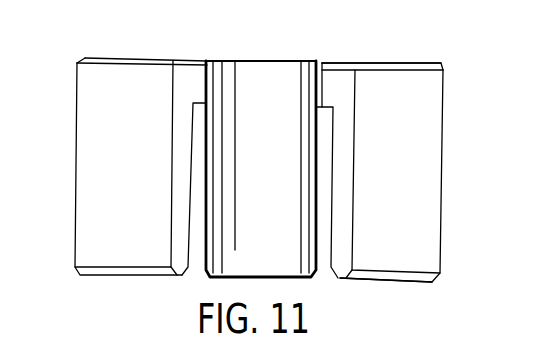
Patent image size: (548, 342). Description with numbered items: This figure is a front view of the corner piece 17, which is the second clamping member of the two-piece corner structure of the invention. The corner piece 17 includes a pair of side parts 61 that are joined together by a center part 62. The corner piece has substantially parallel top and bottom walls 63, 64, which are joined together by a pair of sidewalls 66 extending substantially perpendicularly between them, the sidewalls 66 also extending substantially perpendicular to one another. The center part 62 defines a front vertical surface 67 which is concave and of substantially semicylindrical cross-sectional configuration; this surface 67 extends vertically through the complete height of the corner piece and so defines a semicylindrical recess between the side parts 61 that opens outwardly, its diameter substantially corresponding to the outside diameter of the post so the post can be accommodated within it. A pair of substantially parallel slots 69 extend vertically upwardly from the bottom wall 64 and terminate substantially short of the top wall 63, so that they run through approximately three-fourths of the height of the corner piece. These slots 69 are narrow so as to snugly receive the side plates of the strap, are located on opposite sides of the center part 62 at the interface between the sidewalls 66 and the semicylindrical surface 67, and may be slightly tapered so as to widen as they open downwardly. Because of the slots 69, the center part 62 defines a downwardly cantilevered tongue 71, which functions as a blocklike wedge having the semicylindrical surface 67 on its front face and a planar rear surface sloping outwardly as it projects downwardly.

The corner piece 17 is at (442, 235).
The side parts 61 is at (90, 188).
The center part 62 is at (268, 95).
The top wall 63 is at (408, 62).
The bottom wall 64 is at (390, 282).
The sidewalls 66 is at (259, 224).
The front vertical surface 67 is at (267, 215).
The slots 69 is at (187, 182).
The tongue 71 is at (237, 247).